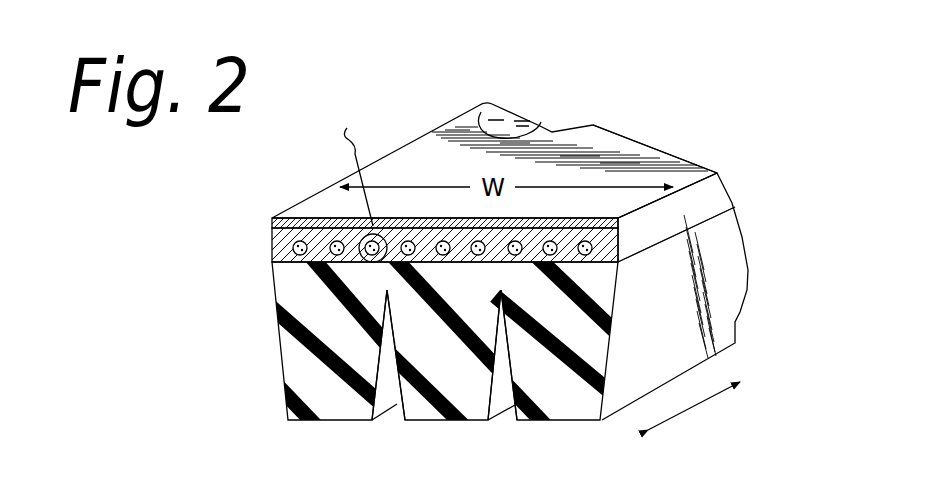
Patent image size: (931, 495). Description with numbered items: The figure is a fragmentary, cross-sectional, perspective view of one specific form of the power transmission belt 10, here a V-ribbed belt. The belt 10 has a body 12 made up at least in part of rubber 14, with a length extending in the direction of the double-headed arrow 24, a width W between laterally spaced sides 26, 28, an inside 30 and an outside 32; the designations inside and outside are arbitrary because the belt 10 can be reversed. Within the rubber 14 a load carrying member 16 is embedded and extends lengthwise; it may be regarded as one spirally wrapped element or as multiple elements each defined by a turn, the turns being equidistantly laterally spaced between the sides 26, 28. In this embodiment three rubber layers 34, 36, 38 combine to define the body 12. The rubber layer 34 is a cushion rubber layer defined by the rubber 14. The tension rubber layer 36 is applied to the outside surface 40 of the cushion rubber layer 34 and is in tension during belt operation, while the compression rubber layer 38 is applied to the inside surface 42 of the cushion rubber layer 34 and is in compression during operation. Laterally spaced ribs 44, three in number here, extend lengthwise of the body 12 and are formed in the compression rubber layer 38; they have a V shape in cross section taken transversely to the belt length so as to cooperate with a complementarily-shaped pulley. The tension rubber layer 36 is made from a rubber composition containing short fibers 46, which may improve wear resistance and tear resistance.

The power transmission belt 10 is at (625, 70).
The body 12 is at (726, 279).
The rubber 14 is at (704, 198).
The load carrying member 16 is at (348, 228).
The double-headed arrow 24 is at (710, 393).
The side 26 is at (272, 240).
The side 28 is at (682, 211).
The inside 30 is at (409, 423).
The outside 32 is at (558, 210).
The cushion rubber layer 34 is at (714, 200).
The tension rubber layer 36 is at (472, 118).
The compression rubber layer 38 is at (576, 398).
The outside surface 40 is at (680, 195).
The inside surface 42 is at (383, 264).
The ribs 44 is at (307, 423).
The short fibers 46 is at (525, 119).